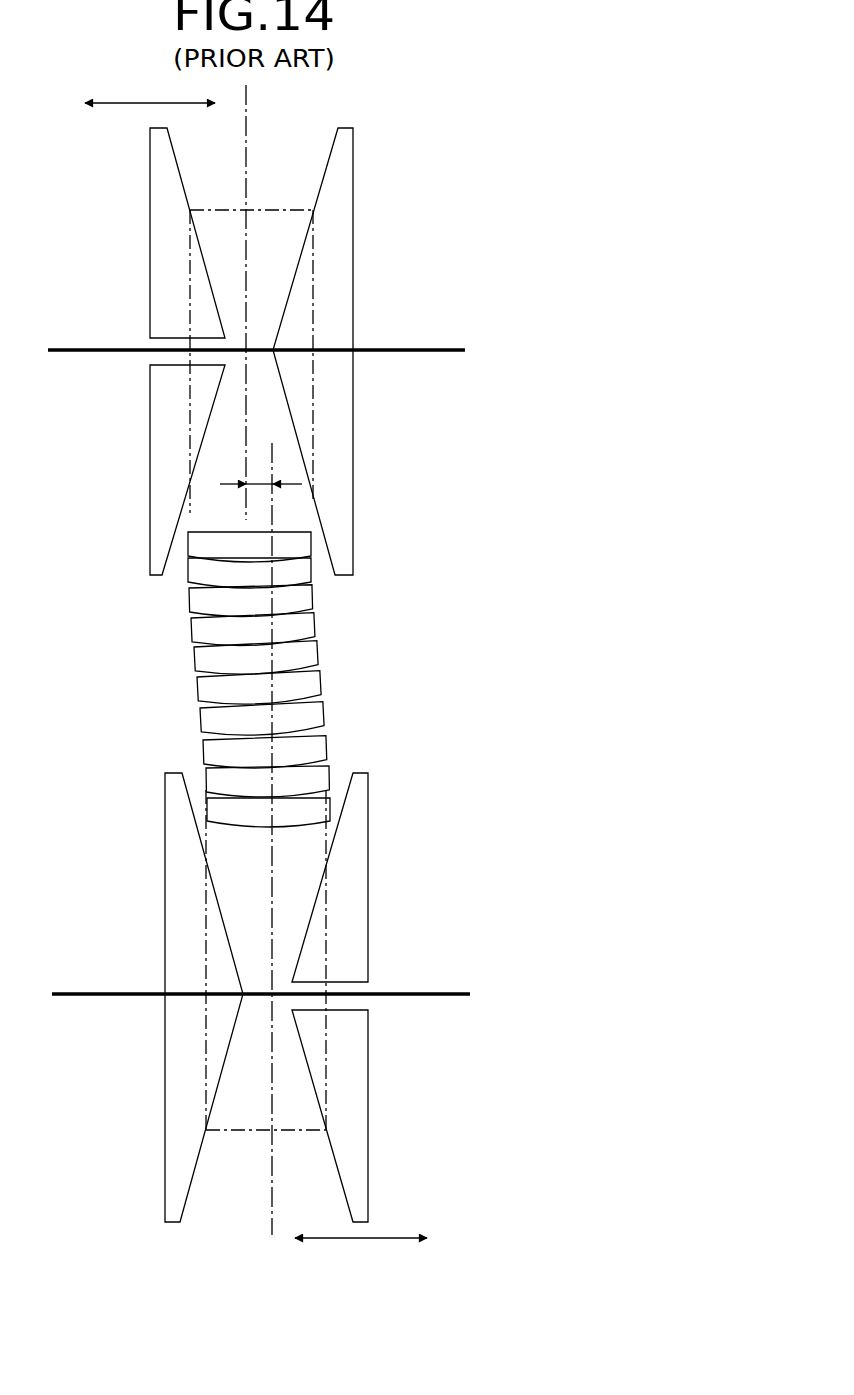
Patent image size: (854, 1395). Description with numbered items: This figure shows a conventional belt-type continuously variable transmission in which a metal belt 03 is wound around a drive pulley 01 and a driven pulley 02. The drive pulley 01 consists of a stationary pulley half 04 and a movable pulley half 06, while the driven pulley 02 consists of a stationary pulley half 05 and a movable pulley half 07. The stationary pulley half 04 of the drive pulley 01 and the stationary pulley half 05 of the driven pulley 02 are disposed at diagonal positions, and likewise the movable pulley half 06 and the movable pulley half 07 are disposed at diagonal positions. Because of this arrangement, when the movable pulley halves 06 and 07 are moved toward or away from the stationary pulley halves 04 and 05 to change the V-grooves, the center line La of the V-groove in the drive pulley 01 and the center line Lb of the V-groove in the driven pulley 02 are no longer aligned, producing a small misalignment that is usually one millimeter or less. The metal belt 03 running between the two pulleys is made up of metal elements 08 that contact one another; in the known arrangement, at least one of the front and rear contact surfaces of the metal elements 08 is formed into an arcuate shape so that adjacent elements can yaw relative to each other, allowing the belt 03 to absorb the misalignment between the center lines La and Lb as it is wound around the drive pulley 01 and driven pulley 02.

The drive pulley 01 is at (259, 330).
The driven pulley 02 is at (261, 840).
The metal belt 03 is at (205, 679).
The stationary pulley half 04 is at (332, 252).
The stationary pulley half 05 is at (183, 1080).
The movable pulley half 06 is at (168, 252).
The movable pulley half 07 is at (342, 1082).
The metal elements 08 is at (203, 603).
The center line of V-groove in drive pulley La is at (247, 168).
The center line of V-groove in driven pulley Lb is at (271, 1160).